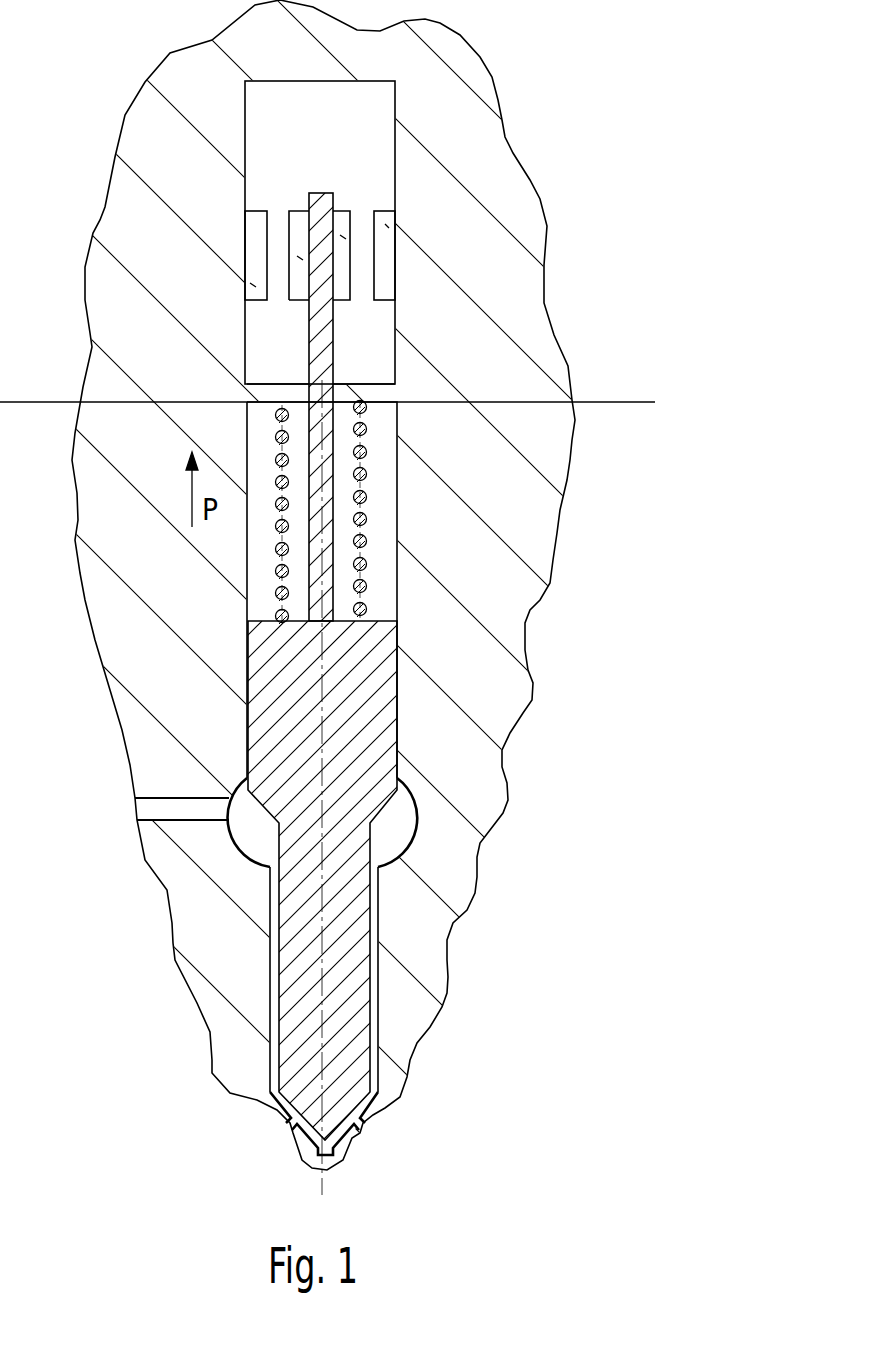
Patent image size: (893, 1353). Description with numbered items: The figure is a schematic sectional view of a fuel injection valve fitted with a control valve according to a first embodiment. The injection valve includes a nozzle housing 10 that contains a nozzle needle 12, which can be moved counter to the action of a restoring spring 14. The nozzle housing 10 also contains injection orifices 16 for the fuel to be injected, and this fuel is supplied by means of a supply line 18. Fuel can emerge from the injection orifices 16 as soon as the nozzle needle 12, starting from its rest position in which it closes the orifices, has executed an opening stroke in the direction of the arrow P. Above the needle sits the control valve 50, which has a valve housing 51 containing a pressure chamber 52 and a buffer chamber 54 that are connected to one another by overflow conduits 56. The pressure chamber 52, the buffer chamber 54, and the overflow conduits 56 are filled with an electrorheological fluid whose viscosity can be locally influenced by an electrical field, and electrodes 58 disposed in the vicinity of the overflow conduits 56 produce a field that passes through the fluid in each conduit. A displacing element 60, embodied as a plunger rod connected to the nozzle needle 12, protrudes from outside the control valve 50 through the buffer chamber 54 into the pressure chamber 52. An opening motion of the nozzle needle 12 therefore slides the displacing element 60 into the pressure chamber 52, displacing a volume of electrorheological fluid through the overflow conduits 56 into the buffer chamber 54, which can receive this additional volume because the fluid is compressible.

The nozzle housing 10 is at (485, 690).
The nozzle needle 12 is at (345, 972).
The restoring spring 14 is at (366, 518).
The injection orifices 16 is at (287, 1133).
The supply line 18 is at (160, 807).
The control valve 50 is at (374, 351).
The valve housing 51 is at (158, 339).
The pressure chamber 52 is at (345, 125).
The buffer chamber 54 is at (268, 363).
The overflow conduits 56 is at (276, 260).
The electrodes 58 is at (252, 285).
The displacing element 60 is at (320, 202).